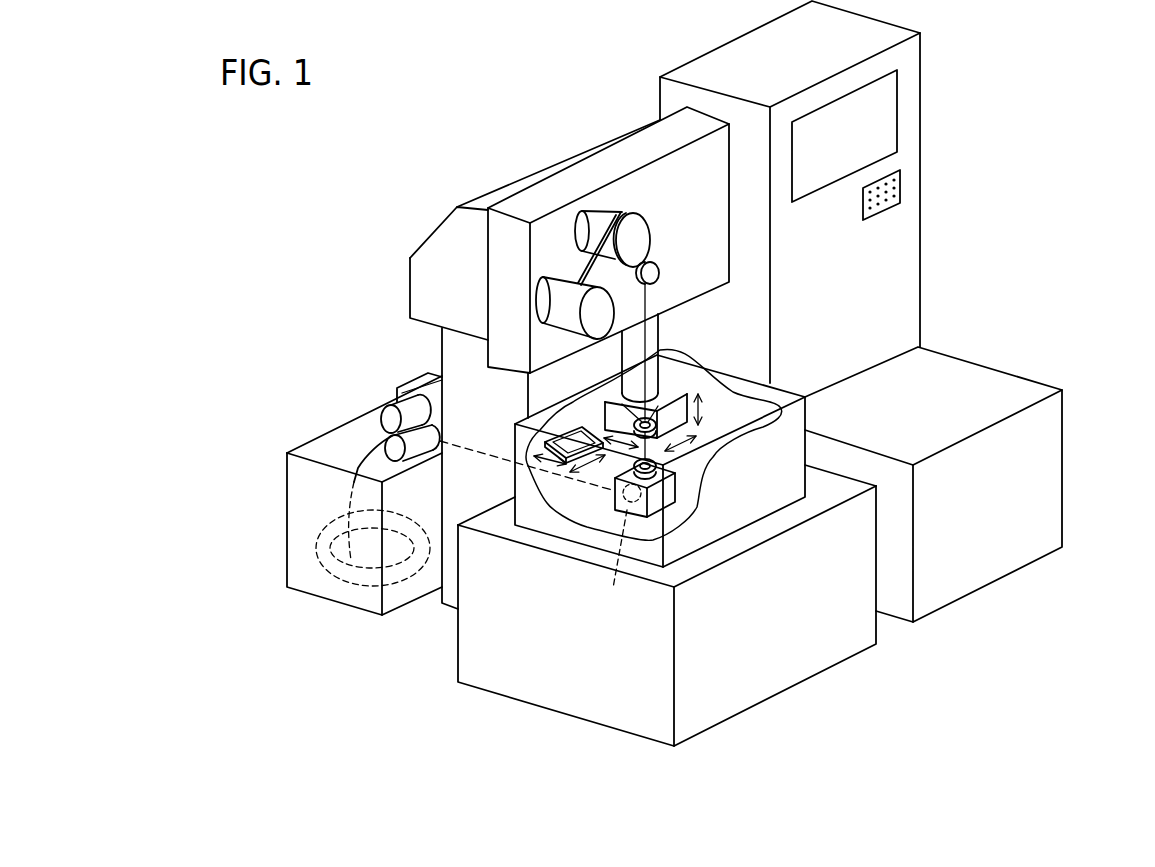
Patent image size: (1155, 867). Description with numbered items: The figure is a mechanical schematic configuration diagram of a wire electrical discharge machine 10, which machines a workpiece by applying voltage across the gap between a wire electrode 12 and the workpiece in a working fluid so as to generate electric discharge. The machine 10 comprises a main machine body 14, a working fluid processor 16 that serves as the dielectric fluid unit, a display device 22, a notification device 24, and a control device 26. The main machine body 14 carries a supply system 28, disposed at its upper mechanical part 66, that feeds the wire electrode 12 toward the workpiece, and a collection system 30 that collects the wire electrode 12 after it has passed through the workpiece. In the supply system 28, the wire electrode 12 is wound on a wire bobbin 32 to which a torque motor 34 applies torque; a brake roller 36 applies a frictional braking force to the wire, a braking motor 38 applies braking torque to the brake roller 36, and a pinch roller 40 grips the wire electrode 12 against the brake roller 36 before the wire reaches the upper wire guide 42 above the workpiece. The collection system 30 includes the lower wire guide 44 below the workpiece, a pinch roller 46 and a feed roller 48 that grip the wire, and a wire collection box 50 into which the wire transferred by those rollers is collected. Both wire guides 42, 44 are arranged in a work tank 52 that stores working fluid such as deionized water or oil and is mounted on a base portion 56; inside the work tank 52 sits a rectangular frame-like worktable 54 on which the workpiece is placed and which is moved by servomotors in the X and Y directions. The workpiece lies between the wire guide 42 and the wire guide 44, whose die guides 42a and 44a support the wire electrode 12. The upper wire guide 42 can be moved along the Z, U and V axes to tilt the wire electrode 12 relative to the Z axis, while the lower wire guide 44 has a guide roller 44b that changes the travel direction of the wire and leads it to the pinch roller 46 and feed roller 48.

The wire electrical discharge machine 10 is at (258, 176).
The wire electrode 12 is at (660, 294).
The main machine body 14 is at (405, 238).
The working fluid processor 16 is at (1052, 457).
The display device 22 is at (884, 116).
The notification device 24 is at (901, 190).
The control device 26 is at (872, 32).
The supply system 28 is at (617, 201).
The collection system 30 is at (330, 410).
The wire bobbin 32 is at (563, 288).
The torque motor 34 is at (533, 292).
The brake roller 36 is at (637, 232).
The braking motor 38 is at (592, 228).
The pinch roller 40 is at (659, 273).
The upper wire guide 42 is at (668, 391).
The die guide 42a is at (638, 420).
The lower wire guide 44 is at (667, 503).
The die guide 44a is at (677, 487).
The guide roller 44b is at (613, 565).
The pinch roller 46 is at (408, 405).
The feed roller 48 is at (426, 455).
The wire collection box 50 is at (300, 497).
The work tank 52 is at (770, 393).
The worktable 54 is at (543, 440).
The base portion 56 is at (804, 664).
The upper mechanical part 66 is at (693, 125).